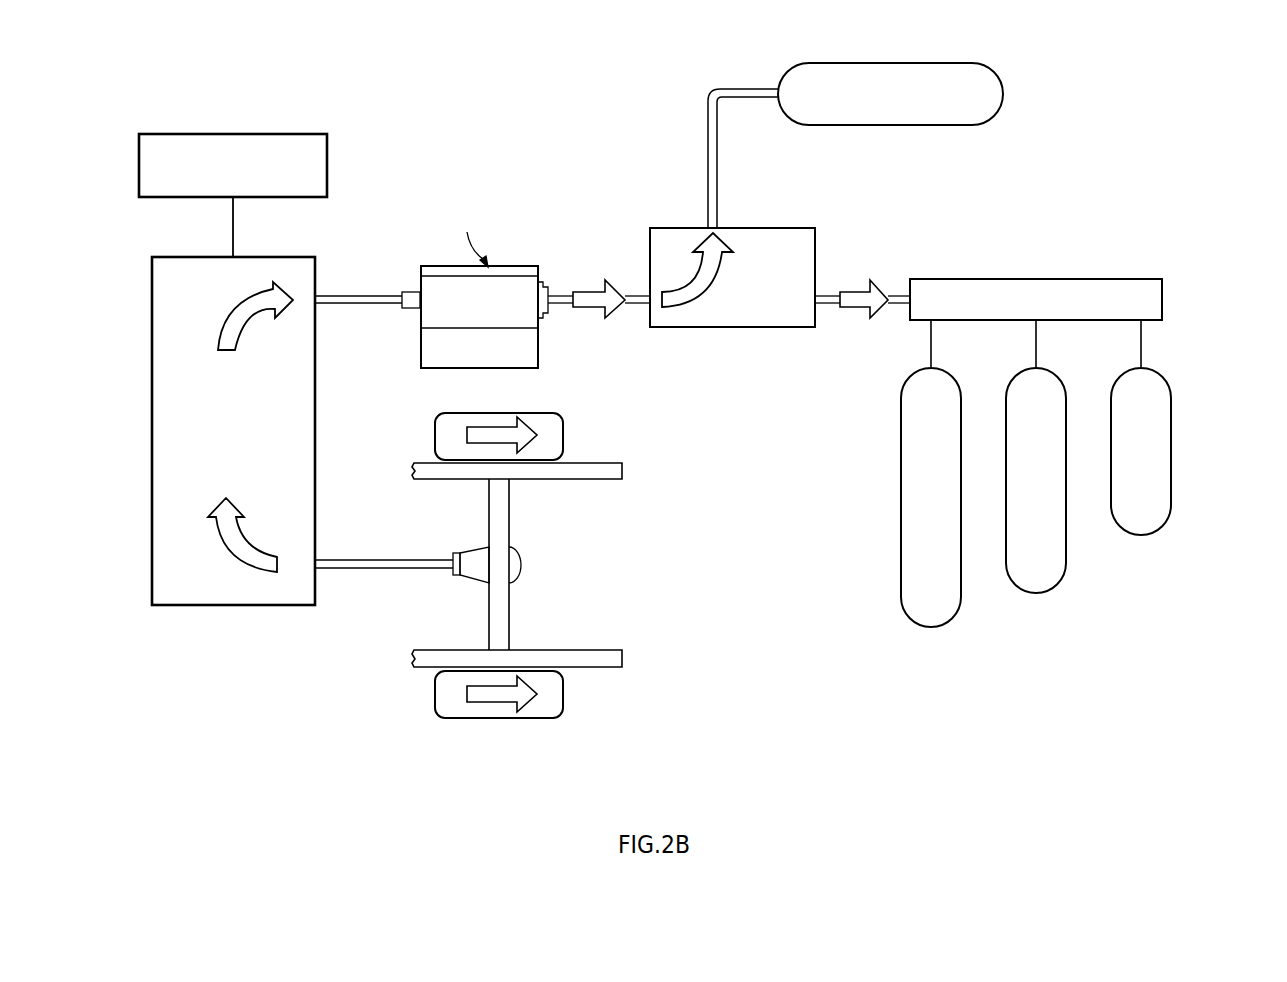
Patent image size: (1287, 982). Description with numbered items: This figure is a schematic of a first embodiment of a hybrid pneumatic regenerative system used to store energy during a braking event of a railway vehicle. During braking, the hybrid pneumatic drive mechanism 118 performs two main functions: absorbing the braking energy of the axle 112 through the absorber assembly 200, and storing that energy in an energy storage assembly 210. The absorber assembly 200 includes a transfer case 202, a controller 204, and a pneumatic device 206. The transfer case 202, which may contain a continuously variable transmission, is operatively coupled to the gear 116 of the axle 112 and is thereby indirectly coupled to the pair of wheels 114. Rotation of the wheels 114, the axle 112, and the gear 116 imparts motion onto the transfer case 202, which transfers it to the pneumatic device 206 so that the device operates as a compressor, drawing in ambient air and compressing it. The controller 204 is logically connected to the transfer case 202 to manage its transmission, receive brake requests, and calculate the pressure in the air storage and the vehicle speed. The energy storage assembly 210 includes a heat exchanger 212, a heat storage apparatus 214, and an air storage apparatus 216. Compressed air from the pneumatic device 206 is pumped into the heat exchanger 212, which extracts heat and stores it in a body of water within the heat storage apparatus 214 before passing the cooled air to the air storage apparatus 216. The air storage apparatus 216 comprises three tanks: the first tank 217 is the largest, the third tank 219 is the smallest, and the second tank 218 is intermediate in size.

The absorber assembly 200 is at (547, 112).
The transfer case 202 is at (152, 337).
The controller 204 is at (139, 168).
The pneumatic device 206 is at (421, 340).
The energy storage assembly 210 is at (1235, 438).
The heat exchanger 212 is at (815, 253).
The heat storage apparatus 214 is at (923, 125).
The air storage apparatus 216 is at (1052, 279).
The first tank 217 is at (930, 627).
The second tank 218 is at (1034, 593).
The third tank 219 is at (1137, 535).
The axle 112 is at (509, 507).
The pair of wheels 114 is at (533, 413).
The gear 116 is at (513, 577).
The hybrid pneumatic drive mechanism 118 is at (957, 754).